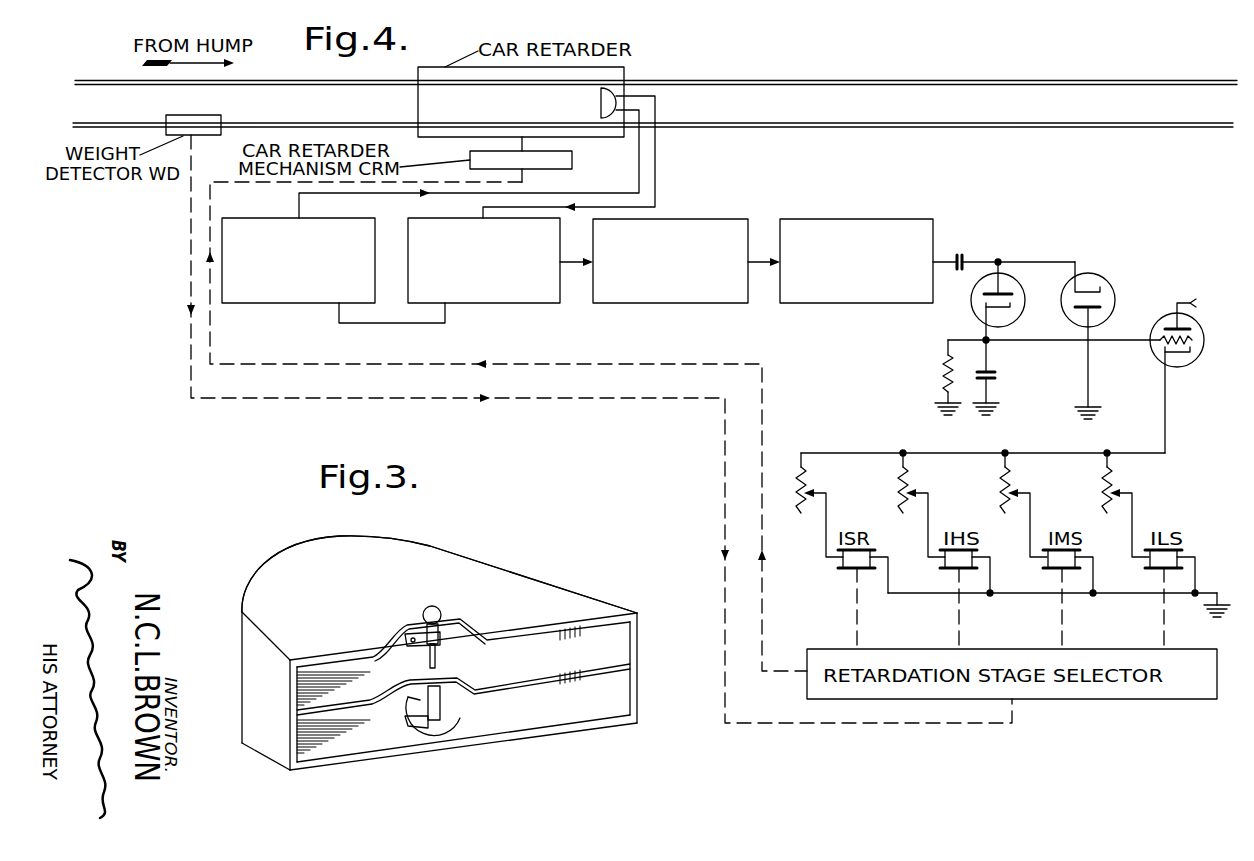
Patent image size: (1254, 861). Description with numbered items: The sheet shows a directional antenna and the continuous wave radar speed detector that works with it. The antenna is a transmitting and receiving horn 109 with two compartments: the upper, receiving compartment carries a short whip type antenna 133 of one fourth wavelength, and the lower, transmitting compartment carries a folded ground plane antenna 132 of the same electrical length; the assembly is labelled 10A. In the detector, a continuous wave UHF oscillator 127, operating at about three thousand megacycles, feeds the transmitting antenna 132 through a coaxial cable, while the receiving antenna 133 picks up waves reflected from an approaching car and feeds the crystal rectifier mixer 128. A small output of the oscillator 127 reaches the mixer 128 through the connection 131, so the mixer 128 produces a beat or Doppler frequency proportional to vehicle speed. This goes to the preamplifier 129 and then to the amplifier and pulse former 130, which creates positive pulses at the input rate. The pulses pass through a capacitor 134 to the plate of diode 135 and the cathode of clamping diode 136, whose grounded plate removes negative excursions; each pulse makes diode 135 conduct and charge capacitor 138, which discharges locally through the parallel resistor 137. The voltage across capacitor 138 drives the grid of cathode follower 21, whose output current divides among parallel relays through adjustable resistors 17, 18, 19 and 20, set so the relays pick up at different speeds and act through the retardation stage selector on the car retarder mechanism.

In FIG. 4, the transmitting and receiving horn 109 is at (612, 93).
In FIG. 3, the transmitting and receiving horn 109 is at (473, 548).
In FIG. 4, the continuous wave UHF oscillator 127 is at (278, 304).
In FIG. 4, the crystal rectifier mixer 128 is at (518, 304).
In FIG. 4, the preamplifier 129 is at (686, 304).
In FIG. 4, the amplifier and pulse former 130 is at (858, 304).
In FIG. 4, the connection 131 is at (405, 323).
In FIG. 4, the capacitor 134 is at (964, 259).
In FIG. 4, the diode 135 is at (1016, 290).
In FIG. 4, the clamping diode 136 is at (1105, 290).
In FIG. 4, the parallel resistor 137 is at (945, 363).
In FIG. 4, the capacitor 138 is at (992, 373).
In FIG. 4, the cathode follower 21 is at (1160, 322).
In FIG. 4, the adjustable resistor 17 is at (805, 487).
In FIG. 4, the adjustable resistor 18 is at (907, 487).
In FIG. 4, the adjustable resistor 19 is at (1010, 487).
In FIG. 4, the adjustable resistor 20 is at (1112, 487).
In FIG. 3, the horn assembly 10A is at (240, 510).
In FIG. 3, the whip type antenna 133 is at (427, 657).
In FIG. 3, the folded ground plane antenna 132 is at (447, 688).